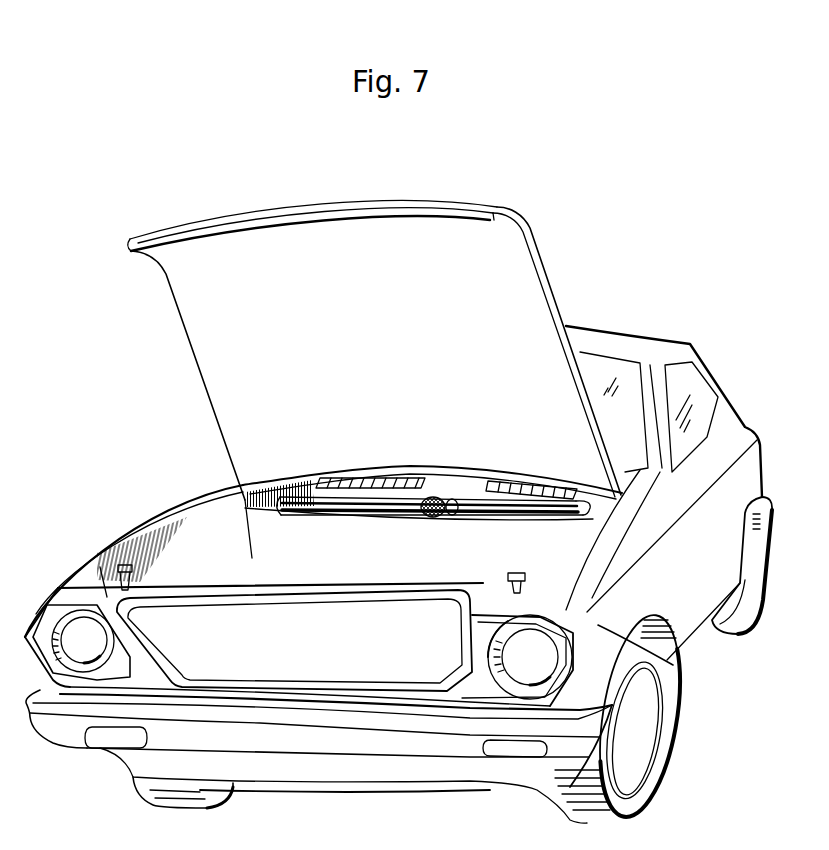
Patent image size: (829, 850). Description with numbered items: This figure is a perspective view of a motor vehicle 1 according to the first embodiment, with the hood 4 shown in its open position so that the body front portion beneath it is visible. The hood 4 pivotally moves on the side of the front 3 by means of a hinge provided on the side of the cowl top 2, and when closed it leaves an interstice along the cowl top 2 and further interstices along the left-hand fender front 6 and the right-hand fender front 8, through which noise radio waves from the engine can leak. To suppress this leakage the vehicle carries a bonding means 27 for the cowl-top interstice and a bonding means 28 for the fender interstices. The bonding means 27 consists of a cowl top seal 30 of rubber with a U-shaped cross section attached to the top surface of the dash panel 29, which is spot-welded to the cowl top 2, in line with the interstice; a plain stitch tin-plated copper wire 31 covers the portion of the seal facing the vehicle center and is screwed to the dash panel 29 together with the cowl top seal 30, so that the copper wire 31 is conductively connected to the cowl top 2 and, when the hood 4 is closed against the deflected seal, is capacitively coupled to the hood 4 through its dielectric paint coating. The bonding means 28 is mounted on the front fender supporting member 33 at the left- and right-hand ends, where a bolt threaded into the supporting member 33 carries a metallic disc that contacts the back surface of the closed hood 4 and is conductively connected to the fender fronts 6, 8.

The motor vehicle 1 is at (348, 752).
The cowl top 2 is at (345, 474).
The front 3 is at (247, 622).
The hood 4 is at (260, 231).
The left-hand fender front 6 is at (673, 665).
The right-hand fender front 8 is at (143, 527).
The bonding means 27 is at (434, 497).
The bonding means 28 is at (120, 567).
The dash panel 29 is at (263, 532).
The cowl top seal 30 is at (515, 511).
The plain stitch tin-plated copper wire 31 is at (456, 499).
The front fender supporting member 33 is at (493, 593).